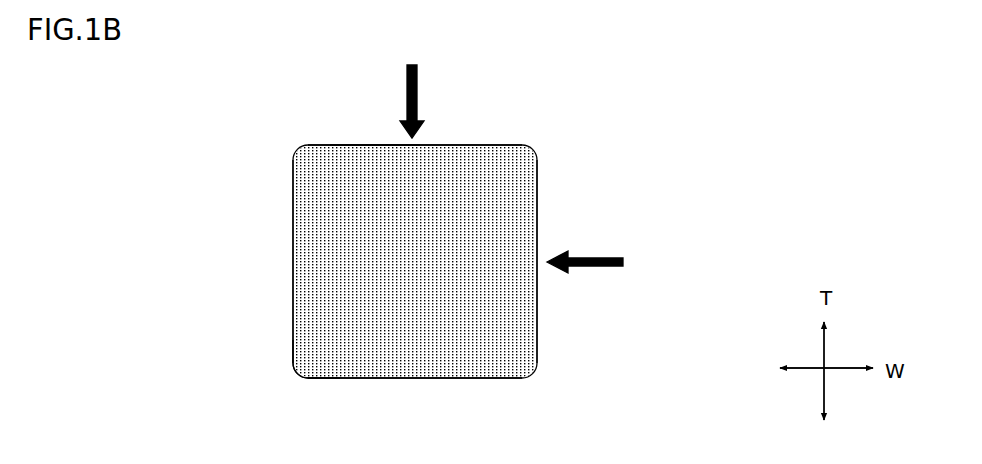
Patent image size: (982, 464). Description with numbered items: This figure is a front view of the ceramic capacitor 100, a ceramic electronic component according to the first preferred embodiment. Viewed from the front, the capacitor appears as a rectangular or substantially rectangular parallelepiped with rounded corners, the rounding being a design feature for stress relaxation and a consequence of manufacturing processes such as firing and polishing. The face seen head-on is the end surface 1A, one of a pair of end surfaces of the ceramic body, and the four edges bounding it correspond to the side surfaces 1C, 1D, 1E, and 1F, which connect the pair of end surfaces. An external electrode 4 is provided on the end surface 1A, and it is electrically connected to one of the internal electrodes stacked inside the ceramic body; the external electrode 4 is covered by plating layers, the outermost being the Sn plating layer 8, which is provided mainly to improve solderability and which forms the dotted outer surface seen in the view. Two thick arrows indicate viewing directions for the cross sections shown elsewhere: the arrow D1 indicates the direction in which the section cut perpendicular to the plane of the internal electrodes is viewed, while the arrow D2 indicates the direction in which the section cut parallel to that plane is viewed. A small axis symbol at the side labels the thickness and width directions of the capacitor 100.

The ceramic capacitor 100 is at (136, 124).
The end surface 1A is at (403, 257).
The external electrode 4 is at (376, 136).
The side surface 1C is at (470, 134).
The side surface 1D is at (281, 261).
The side surface 1E is at (407, 387).
The side surface 1F is at (550, 299).
The Sn plating layer 8 is at (323, 340).
The arrow D1 is at (602, 263).
The arrow D2 is at (411, 88).